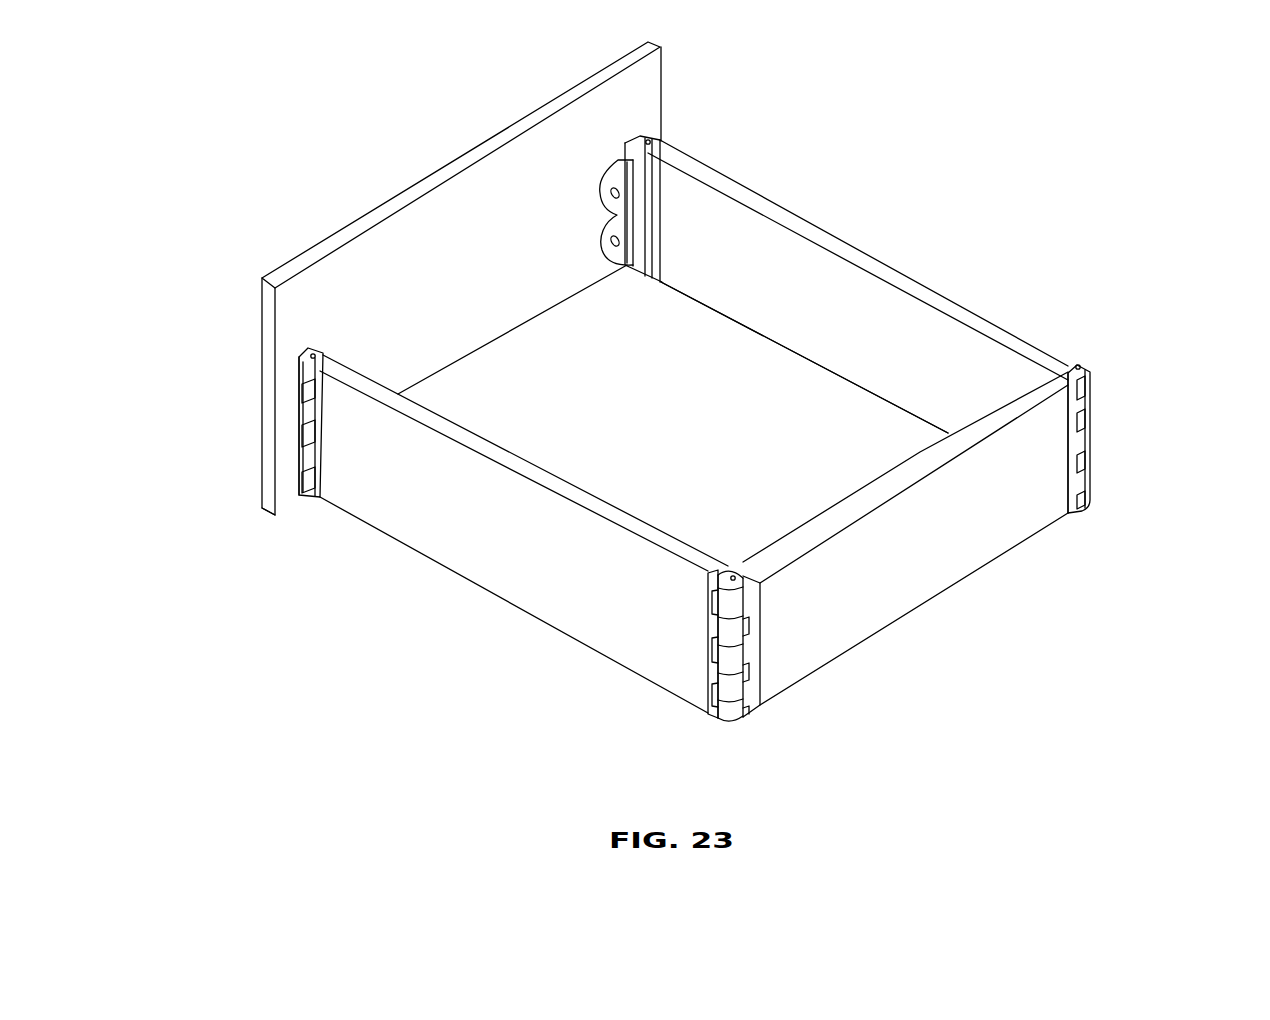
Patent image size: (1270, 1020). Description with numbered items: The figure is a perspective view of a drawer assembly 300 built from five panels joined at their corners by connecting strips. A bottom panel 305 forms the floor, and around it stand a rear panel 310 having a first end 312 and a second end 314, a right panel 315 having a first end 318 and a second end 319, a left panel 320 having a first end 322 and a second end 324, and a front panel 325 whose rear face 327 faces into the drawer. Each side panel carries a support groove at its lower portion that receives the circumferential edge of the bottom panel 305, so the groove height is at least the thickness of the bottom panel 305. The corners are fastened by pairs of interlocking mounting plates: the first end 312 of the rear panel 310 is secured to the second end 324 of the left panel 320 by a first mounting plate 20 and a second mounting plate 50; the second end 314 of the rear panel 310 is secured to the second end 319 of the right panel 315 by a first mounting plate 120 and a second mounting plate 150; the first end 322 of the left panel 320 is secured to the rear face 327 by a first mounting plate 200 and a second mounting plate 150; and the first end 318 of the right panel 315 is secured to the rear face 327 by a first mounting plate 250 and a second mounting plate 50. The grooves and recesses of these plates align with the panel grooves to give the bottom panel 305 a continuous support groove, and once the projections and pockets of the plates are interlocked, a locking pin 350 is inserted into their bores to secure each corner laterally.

The first mounting plate 20 is at (752, 692).
The second mounting plate 50 is at (660, 145).
The first mounting plate 120 is at (1085, 404).
The second mounting plate 150 is at (299, 473).
The first mounting plate 200 is at (297, 435).
The first mounting plate 250 is at (607, 203).
The drawer assembly 300 is at (364, 662).
The bottom panel 305 is at (681, 444).
The rear panel 310 is at (960, 542).
The first end 312 is at (787, 709).
The second end 314 is at (1077, 537).
The right panel 315 is at (893, 273).
The first end 318 is at (699, 140).
The second end 319 is at (1073, 333).
The left panel 320 is at (495, 567).
The first end 322 is at (311, 519).
The second end 324 is at (698, 723).
The front panel 325 is at (465, 245).
The rear face 327 is at (383, 300).
The locking pin 350 is at (649, 142).